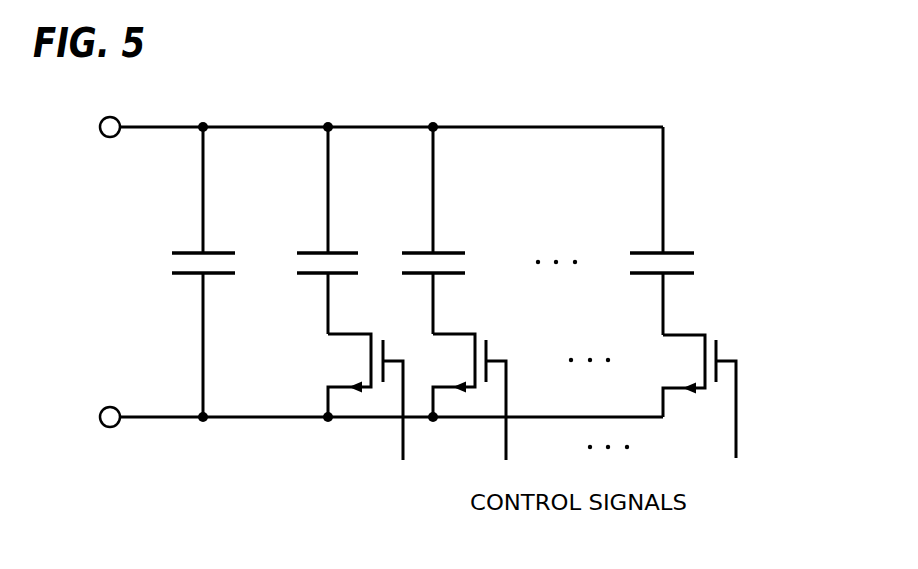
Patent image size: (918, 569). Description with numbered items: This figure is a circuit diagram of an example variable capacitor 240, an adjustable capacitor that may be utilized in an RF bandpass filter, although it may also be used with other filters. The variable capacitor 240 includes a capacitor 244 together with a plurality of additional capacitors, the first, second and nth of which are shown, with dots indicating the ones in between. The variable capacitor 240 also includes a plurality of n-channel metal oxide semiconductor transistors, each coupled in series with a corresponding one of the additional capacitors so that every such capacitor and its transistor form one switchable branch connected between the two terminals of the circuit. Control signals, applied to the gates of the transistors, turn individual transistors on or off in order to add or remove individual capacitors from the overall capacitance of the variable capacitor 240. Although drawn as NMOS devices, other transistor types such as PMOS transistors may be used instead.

The variable capacitor 240 is at (473, 96).
The capacitor 244 is at (216, 252).